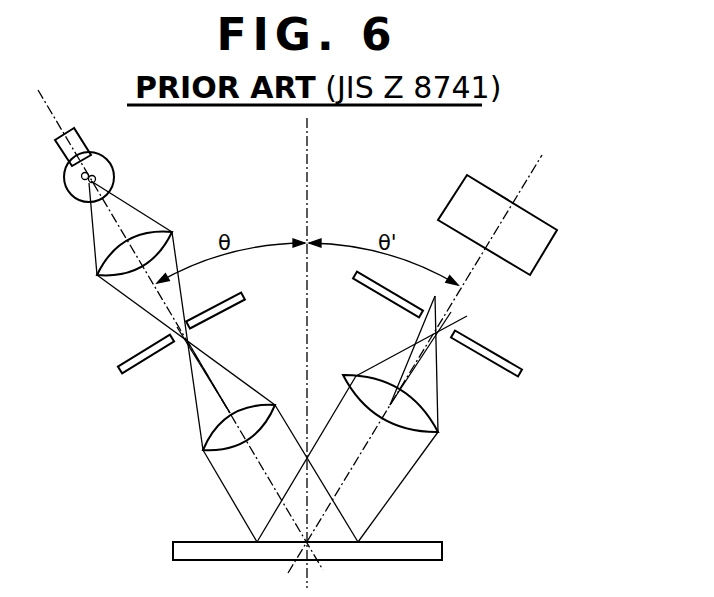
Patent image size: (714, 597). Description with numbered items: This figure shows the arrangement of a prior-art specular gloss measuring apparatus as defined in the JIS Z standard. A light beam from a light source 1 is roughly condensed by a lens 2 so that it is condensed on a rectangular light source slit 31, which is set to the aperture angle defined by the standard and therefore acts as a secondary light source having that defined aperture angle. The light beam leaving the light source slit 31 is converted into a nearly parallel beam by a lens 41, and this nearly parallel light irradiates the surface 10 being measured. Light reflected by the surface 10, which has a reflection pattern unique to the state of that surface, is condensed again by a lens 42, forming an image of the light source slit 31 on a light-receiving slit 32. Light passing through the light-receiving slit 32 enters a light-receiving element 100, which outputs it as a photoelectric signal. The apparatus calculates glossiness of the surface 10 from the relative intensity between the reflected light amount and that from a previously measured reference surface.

The light source 1 is at (60, 162).
The lens 2 is at (100, 258).
The light source slit 31 is at (124, 367).
The lens 41 is at (206, 437).
The lens 42 is at (440, 426).
The light-receiving slit 32 is at (521, 371).
The light-receiving element 100 is at (536, 268).
The surface 10 is at (403, 542).